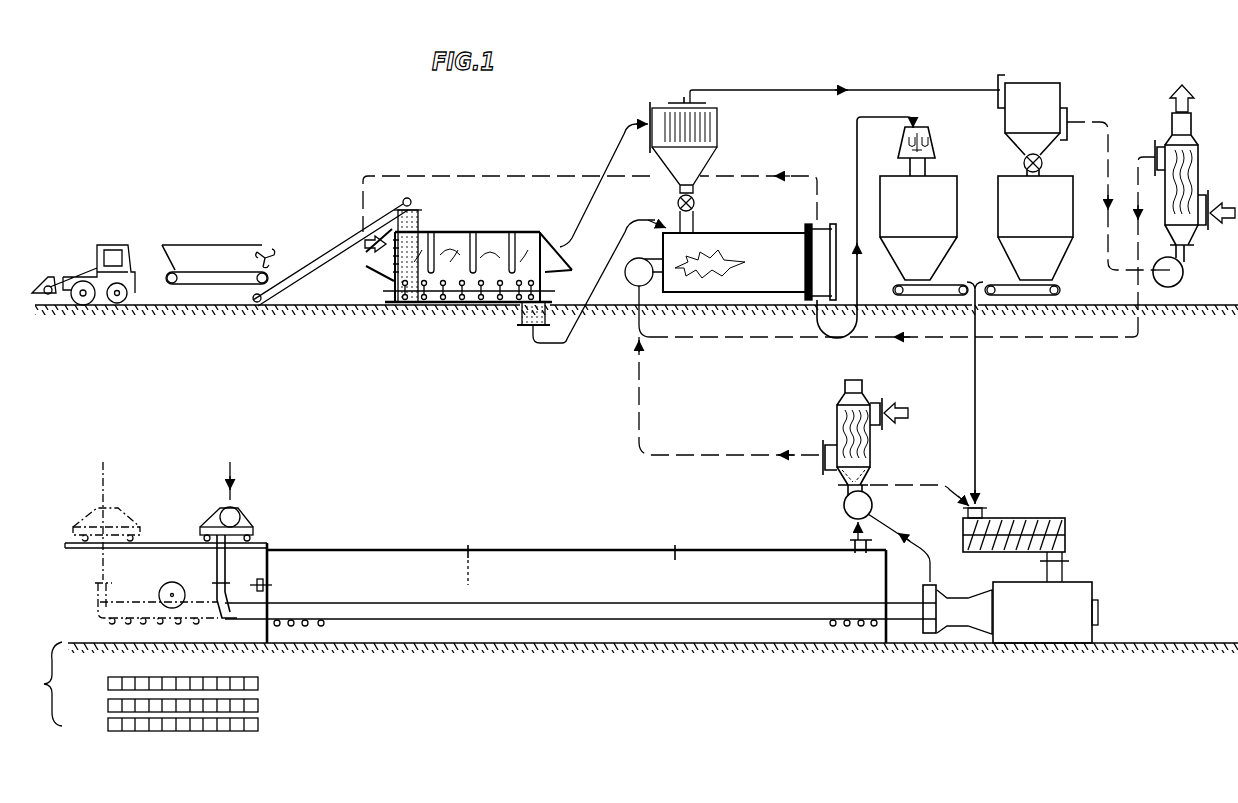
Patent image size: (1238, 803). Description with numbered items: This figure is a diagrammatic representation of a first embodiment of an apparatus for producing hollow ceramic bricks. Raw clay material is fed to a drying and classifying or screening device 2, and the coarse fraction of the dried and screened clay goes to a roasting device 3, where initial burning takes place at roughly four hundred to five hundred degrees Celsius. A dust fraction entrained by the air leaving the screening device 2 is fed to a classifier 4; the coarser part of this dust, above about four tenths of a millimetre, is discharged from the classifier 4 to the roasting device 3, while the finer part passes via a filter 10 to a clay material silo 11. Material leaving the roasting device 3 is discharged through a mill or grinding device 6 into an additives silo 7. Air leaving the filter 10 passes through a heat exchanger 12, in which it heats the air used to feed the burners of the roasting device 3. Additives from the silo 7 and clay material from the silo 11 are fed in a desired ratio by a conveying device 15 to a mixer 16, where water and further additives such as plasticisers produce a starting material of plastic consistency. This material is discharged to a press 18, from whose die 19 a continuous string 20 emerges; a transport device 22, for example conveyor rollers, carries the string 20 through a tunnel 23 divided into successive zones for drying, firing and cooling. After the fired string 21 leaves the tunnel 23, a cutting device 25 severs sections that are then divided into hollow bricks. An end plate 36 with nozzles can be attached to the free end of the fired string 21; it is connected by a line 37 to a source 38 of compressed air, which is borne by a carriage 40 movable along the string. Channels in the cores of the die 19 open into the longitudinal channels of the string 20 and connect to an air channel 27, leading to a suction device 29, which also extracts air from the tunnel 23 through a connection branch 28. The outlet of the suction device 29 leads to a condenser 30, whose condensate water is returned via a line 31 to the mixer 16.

The drying and classifying or screening device 2 is at (473, 232).
The roasting device 3 is at (757, 248).
The classifier 4 is at (703, 128).
The mill or grinding device 6 is at (933, 141).
The additives silo 7 is at (924, 235).
The filter 10 is at (1052, 95).
The clay material silo 11 is at (1029, 235).
The heat exchanger 12 is at (1196, 166).
The conveying device 15 is at (997, 278).
The mixer 16 is at (1022, 518).
The press 18 is at (1075, 590).
The die 19 is at (933, 593).
The string 20 is at (855, 606).
The fired string 21 is at (307, 606).
The transport device 22 is at (861, 628).
The tunnel 23 is at (533, 562).
The cutting device 25 is at (164, 586).
The air channel 27 is at (905, 540).
The connection branch 28 is at (852, 542).
The suction device 29 is at (845, 507).
The condenser 30 is at (838, 425).
The line 31 is at (910, 485).
The end plate 36 is at (218, 604).
The line 37 is at (217, 568).
The source of compressed air 38 is at (236, 511).
The carriage 40 is at (252, 526).